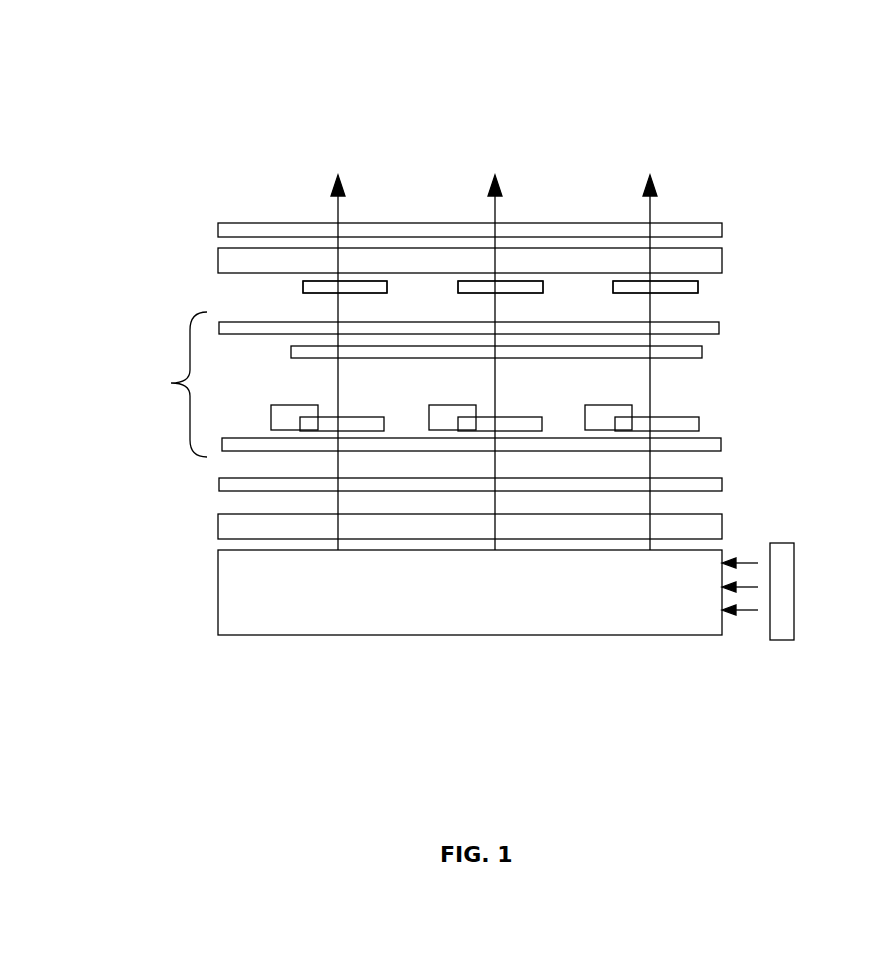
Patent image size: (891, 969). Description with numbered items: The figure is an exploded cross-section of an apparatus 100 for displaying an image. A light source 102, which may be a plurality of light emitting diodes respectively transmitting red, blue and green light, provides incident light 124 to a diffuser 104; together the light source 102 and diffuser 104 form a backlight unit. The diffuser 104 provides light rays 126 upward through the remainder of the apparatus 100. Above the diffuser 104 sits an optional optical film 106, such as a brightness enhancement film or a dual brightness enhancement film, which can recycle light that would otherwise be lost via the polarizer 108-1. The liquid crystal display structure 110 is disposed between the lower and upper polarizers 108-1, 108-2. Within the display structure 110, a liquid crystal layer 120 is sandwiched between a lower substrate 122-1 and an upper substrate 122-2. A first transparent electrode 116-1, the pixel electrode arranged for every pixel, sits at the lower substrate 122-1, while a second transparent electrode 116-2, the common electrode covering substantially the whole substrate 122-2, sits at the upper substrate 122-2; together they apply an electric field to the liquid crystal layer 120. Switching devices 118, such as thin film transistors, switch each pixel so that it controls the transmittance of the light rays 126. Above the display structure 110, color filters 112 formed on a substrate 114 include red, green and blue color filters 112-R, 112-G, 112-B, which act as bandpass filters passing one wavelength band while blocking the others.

The apparatus 100 is at (495, 41).
The light source 102 is at (790, 600).
The diffuser 104 is at (518, 607).
The optical film 106 is at (722, 527).
The polarizer 108-1 is at (722, 485).
The polarizer 108-2 is at (722, 229).
The liquid crystal display structure 110 is at (152, 384).
The color filters 112 is at (730, 286).
The red color filter 112-R is at (303, 288).
The green color filter 112-G is at (461, 294).
The blue color filter 112-B is at (616, 294).
The substrate 114 is at (712, 258).
The first transparent electrode 116-1 is at (680, 417).
The second transparent electrode 116-2 is at (702, 352).
The switching devices 118 is at (600, 405).
The liquid crystal layer 120 is at (428, 393).
The lower substrate 122-1 is at (721, 445).
The upper substrate 122-2 is at (719, 328).
The incident light 124 is at (745, 613).
The light rays 126 is at (345, 207).